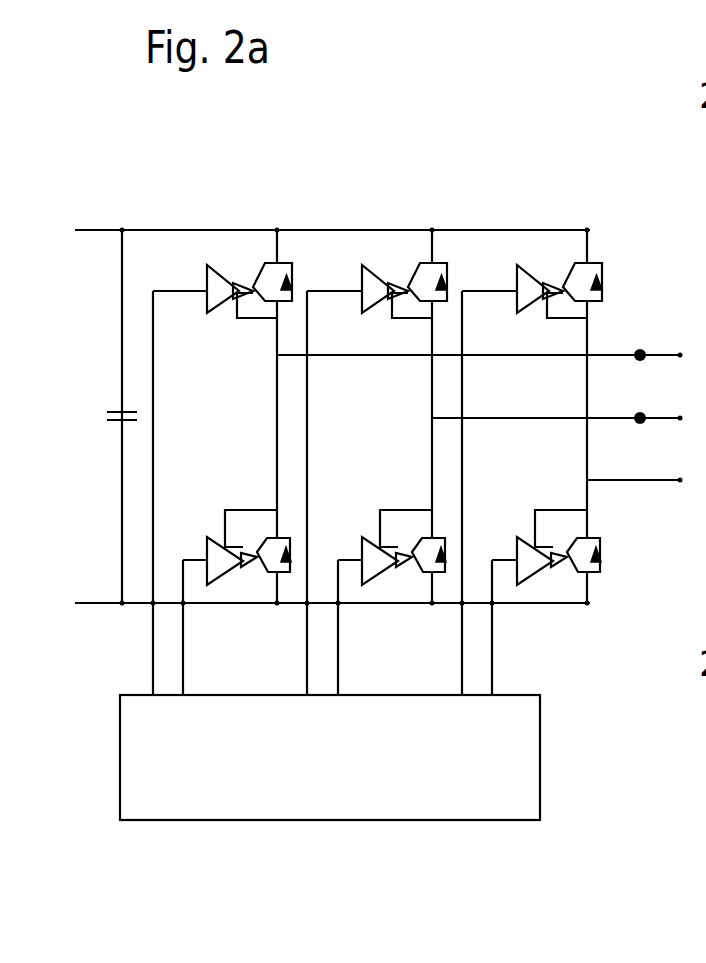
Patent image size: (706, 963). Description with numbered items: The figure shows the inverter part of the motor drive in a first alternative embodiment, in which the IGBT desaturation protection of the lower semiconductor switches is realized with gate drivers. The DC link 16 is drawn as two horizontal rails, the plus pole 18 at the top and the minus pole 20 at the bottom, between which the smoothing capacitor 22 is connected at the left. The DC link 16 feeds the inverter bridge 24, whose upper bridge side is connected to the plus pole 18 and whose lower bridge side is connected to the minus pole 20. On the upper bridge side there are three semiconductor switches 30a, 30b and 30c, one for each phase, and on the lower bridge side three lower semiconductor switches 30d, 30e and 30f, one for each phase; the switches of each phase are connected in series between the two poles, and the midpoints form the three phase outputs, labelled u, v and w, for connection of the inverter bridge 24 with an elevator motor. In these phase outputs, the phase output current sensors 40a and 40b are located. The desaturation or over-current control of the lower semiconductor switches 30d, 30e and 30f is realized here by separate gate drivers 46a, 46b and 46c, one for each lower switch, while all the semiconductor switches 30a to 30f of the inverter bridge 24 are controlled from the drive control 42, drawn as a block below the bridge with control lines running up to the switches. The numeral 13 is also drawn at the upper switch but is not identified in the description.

The freewheeling diode 13 is at (293, 277).
The DC link 16 is at (95, 200).
The plus pole of the DC link 18 is at (185, 230).
The minus pole of the DC link 20 is at (138, 605).
The smoothing capacitor 22 is at (102, 398).
The inverter bridge 24 is at (395, 135).
The semiconductor switch of the inverter bridge 30a is at (253, 280).
The semiconductor switch of the inverter bridge 30b is at (415, 280).
The semiconductor switch of the inverter bridge 30c is at (568, 277).
The lower semiconductor switch of the inverter bridge 30d is at (250, 560).
The lower semiconductor switch of the inverter bridge 30e is at (414, 560).
The lower semiconductor switch of the inverter bridge 30f is at (570, 553).
The current sensor of the phase output 40a is at (640, 355).
The current sensor of the phase output 40b is at (640, 418).
The drive control 42 is at (312, 783).
The gate driver of the lower semiconductor switch 46a is at (207, 528).
The gate driver of the lower semiconductor switch 46b is at (375, 502).
The gate driver of the lower semiconductor switch 46c is at (520, 510).